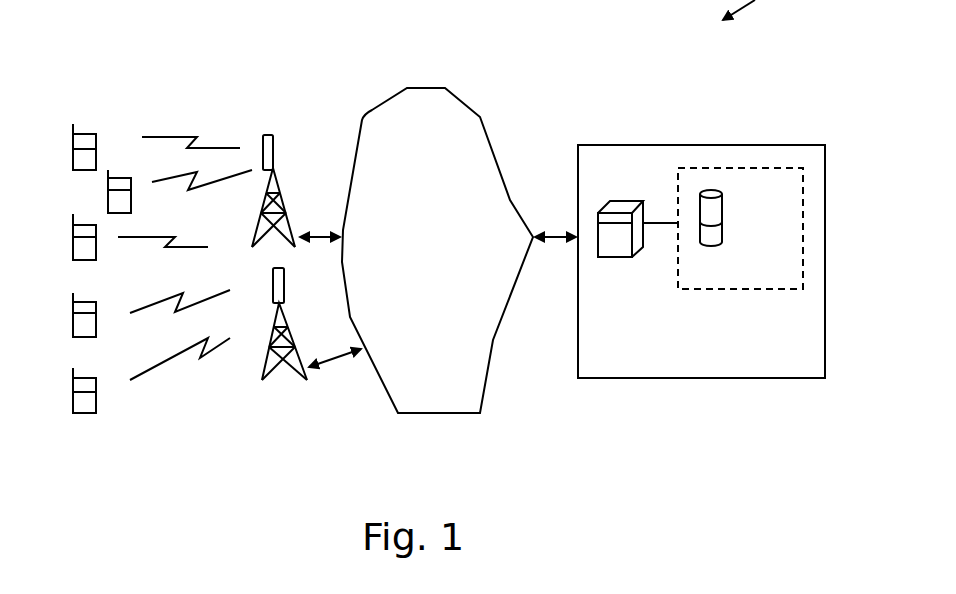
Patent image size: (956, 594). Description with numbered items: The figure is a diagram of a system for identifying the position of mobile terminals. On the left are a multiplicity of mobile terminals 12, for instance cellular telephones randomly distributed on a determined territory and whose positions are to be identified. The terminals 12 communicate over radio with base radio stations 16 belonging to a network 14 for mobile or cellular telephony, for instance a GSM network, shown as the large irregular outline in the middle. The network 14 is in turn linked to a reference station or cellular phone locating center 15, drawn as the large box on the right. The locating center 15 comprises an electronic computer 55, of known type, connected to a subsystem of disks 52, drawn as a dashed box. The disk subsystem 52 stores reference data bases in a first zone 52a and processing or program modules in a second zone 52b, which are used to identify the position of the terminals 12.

The mobile terminals 12 is at (85, 160).
The network 14 is at (378, 113).
The cellular phone locating center 15 is at (643, 157).
The base radio stations 16 is at (275, 180).
The subsystem of disks 52 is at (723, 278).
The first zone 52a is at (713, 212).
The second zone 52b is at (713, 235).
The electronic computer 55 is at (620, 245).